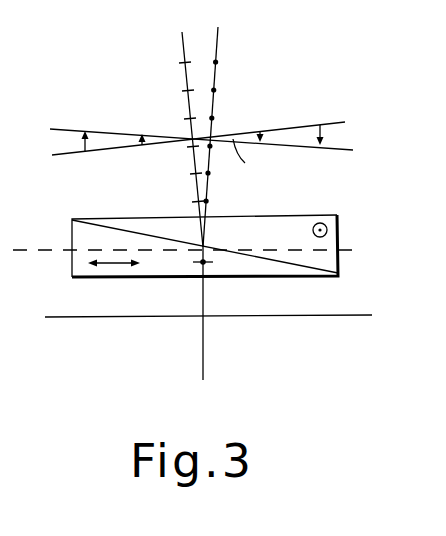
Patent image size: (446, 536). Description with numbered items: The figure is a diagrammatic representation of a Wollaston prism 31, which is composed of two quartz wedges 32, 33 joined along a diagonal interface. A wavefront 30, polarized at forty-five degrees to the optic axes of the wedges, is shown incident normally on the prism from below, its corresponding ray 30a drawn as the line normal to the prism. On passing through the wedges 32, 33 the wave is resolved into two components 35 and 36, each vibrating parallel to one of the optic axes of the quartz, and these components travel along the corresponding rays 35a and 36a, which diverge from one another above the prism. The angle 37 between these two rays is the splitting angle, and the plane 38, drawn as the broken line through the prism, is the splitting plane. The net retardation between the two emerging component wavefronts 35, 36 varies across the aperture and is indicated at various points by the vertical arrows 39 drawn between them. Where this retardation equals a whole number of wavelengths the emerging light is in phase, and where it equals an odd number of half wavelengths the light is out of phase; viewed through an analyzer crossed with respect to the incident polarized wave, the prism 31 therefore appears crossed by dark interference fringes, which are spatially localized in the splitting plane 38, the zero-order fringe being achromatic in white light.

The wavefront 30 is at (225, 317).
The incident ray 30a is at (210, 327).
The Wollaston prism 31 is at (72, 268).
The quartz wedge 32 is at (184, 271).
The quartz wedge 33 is at (281, 244).
The wavefront component 35 is at (213, 128).
The ray 35a is at (170, 129).
The wavefront component 36 is at (216, 150).
The ray 36a is at (234, 128).
The splitting angle 37 is at (203, 212).
The splitting plane 38 is at (375, 247).
The vertical arrows 39 is at (138, 140).